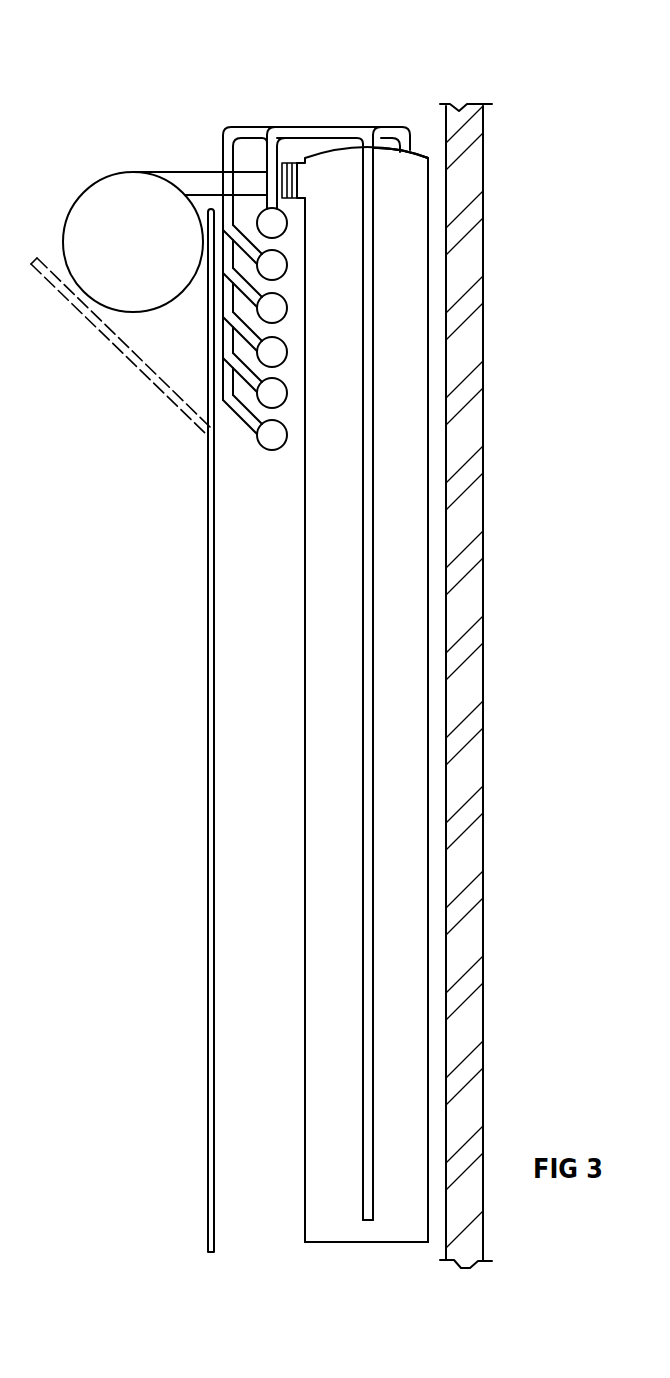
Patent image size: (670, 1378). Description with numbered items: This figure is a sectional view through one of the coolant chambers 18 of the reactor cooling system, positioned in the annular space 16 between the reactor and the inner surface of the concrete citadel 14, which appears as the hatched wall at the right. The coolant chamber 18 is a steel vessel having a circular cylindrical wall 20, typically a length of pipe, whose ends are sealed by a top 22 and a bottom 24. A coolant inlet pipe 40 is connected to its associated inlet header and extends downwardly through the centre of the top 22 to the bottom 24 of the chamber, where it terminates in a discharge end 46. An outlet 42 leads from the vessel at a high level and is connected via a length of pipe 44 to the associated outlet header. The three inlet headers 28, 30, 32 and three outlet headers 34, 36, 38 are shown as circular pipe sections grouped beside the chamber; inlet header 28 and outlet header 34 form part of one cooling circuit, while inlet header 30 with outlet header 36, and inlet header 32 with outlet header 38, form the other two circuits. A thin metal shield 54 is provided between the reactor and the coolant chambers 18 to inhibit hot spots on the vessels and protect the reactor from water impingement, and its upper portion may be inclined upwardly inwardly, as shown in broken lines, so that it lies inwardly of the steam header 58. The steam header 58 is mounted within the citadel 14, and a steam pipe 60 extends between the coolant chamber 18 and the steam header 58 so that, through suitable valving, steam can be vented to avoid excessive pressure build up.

The citadel 14 is at (473, 167).
The annular space 16 is at (403, 64).
The coolant chamber 18 is at (386, 1244).
The circular cylindrical wall 20 is at (340, 668).
The top 22 is at (427, 152).
The bottom 24 is at (367, 1243).
The inlet header 28 is at (276, 224).
The inlet header 30 is at (276, 266).
The inlet header 32 is at (276, 309).
The outlet header 34 is at (276, 353).
The outlet header 36 is at (276, 394).
The outlet header 38 is at (276, 436).
The coolant inlet pipe 40 is at (272, 155).
The outlet 42 is at (407, 152).
The length of pipe 44 is at (388, 133).
The discharge end 46 is at (368, 1222).
The metal shield 54 is at (211, 503).
The steam header 58 is at (115, 208).
The steam pipe 60 is at (250, 183).